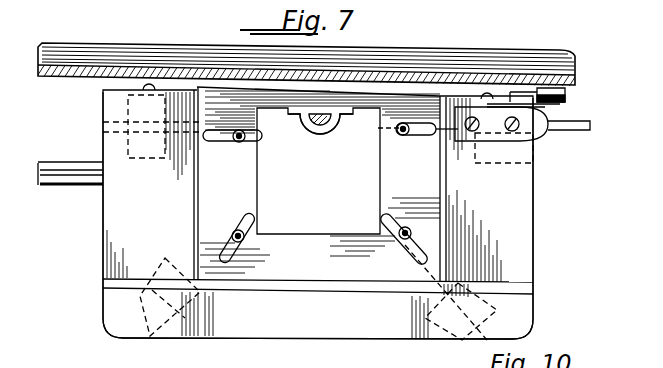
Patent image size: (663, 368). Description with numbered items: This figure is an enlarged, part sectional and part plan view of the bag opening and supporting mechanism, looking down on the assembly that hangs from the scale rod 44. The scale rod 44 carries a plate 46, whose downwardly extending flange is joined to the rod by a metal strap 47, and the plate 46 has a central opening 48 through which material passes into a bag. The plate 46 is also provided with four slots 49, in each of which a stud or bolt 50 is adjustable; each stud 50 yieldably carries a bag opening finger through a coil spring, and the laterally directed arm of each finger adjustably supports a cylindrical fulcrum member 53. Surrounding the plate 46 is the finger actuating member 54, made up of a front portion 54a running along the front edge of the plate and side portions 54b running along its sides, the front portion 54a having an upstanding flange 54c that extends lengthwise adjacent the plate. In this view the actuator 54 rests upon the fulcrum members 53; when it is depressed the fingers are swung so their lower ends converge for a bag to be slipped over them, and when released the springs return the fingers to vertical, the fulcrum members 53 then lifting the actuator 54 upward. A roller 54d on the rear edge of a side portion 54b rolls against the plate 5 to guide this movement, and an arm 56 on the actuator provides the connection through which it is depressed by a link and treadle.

The plate 5 is at (520, 78).
The scale rod 44 is at (334, 118).
The plate 46 is at (243, 178).
The metal strap 47 is at (318, 132).
The central opening 48 is at (327, 213).
The slot 49 is at (218, 140).
The stud 50 is at (254, 140).
The cylindrical fulcrum member 53 is at (130, 107).
The finger actuating member 54 is at (533, 189).
The front portion 54a is at (271, 327).
The side portion 54b is at (105, 222).
The upstanding flange 54c is at (376, 292).
The roller 54d is at (556, 90).
The arm 56 is at (549, 121).